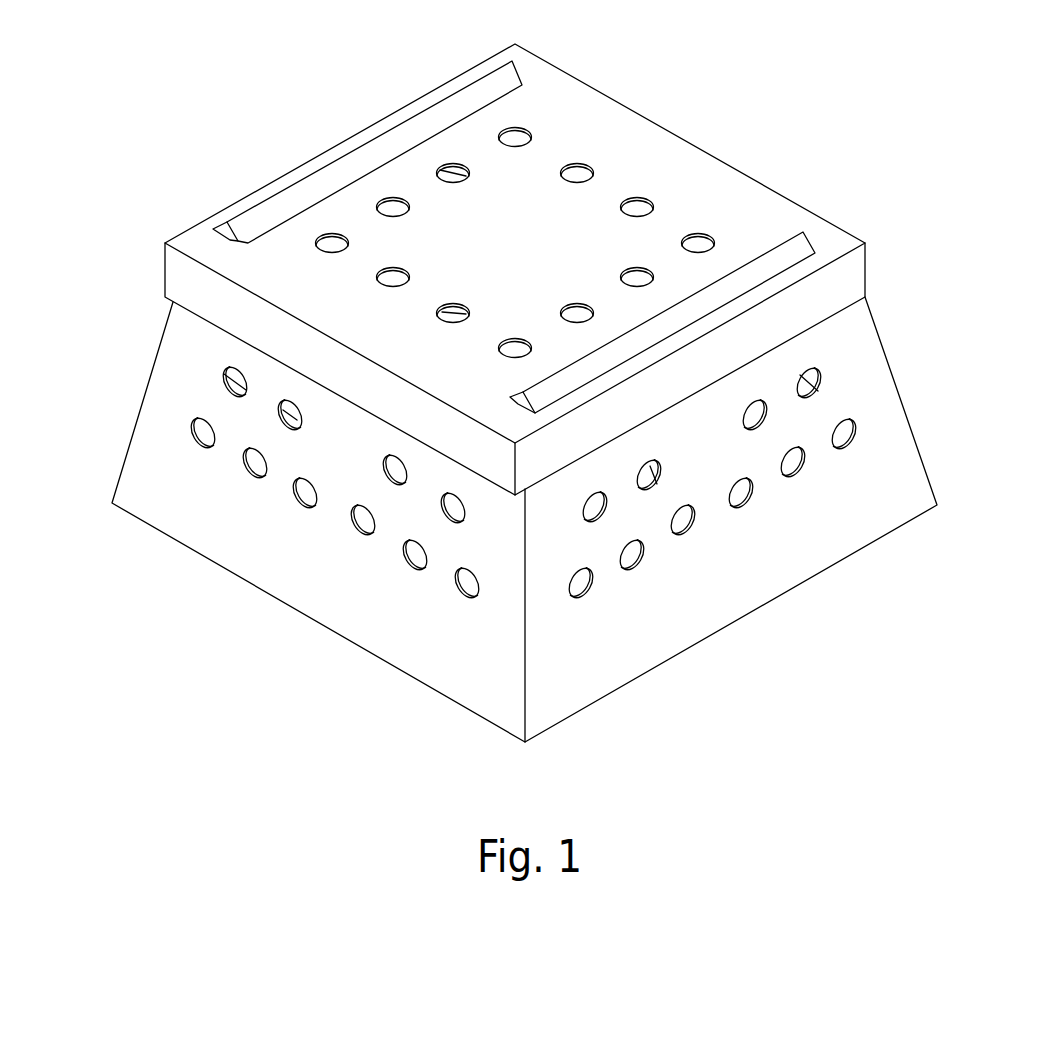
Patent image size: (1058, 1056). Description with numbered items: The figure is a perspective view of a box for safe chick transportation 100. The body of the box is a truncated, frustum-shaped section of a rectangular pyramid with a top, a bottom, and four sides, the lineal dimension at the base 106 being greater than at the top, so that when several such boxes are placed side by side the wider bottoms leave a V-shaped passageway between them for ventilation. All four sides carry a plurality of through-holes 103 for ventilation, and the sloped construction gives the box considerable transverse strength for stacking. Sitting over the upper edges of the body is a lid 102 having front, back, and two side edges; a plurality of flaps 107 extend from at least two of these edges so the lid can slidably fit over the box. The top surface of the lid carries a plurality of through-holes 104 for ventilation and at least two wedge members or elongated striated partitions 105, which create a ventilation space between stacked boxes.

The box for safe chick transportation 100 is at (817, 88).
The lid 102 is at (737, 222).
The through-holes 103 is at (748, 504).
The through-holes 104 is at (588, 168).
The wedge members 105 is at (407, 132).
The base 106 is at (358, 648).
The flaps 107 is at (192, 285).